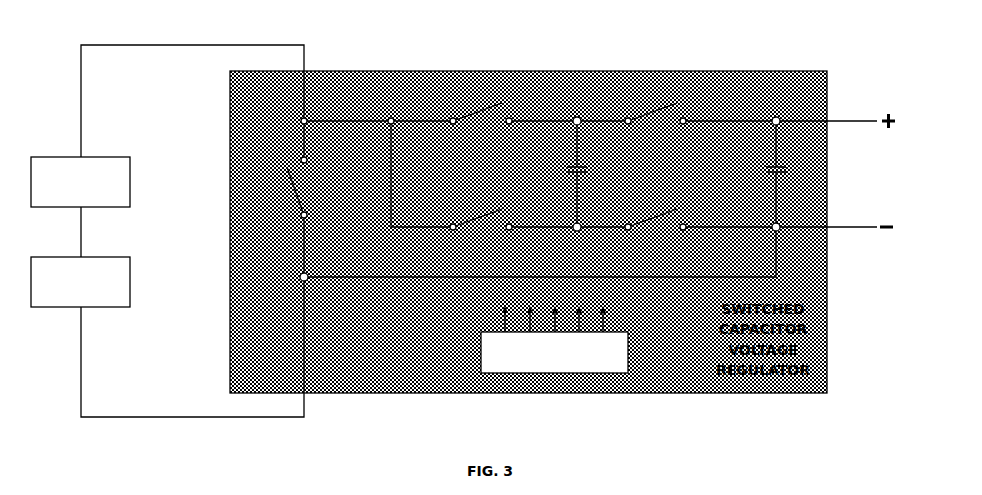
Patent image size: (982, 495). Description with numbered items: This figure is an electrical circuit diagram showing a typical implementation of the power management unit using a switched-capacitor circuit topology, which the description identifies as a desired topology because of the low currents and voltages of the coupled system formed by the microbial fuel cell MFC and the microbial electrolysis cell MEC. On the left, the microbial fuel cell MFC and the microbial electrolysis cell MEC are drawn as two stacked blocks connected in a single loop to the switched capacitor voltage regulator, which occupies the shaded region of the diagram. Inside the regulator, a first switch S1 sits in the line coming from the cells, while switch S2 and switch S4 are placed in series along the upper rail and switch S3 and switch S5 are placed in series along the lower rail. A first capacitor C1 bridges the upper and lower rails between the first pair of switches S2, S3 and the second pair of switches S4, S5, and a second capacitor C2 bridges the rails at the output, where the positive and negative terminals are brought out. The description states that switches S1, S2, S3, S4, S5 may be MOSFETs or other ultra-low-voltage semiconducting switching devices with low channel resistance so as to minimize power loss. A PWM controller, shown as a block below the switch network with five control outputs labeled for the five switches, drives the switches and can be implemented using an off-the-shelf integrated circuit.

The microbial fuel cell MFC is at (80, 182).
The microbial electrolysis cell MEC is at (80, 282).
The switch S1 is at (311, 199).
The switch S2 is at (481, 128).
The switch S3 is at (481, 234).
The switch S4 is at (655, 128).
The switch S5 is at (655, 234).
The capacitor C1 is at (586, 174).
The capacitor C2 is at (785, 174).
The PWM controller PWM is at (554, 339).